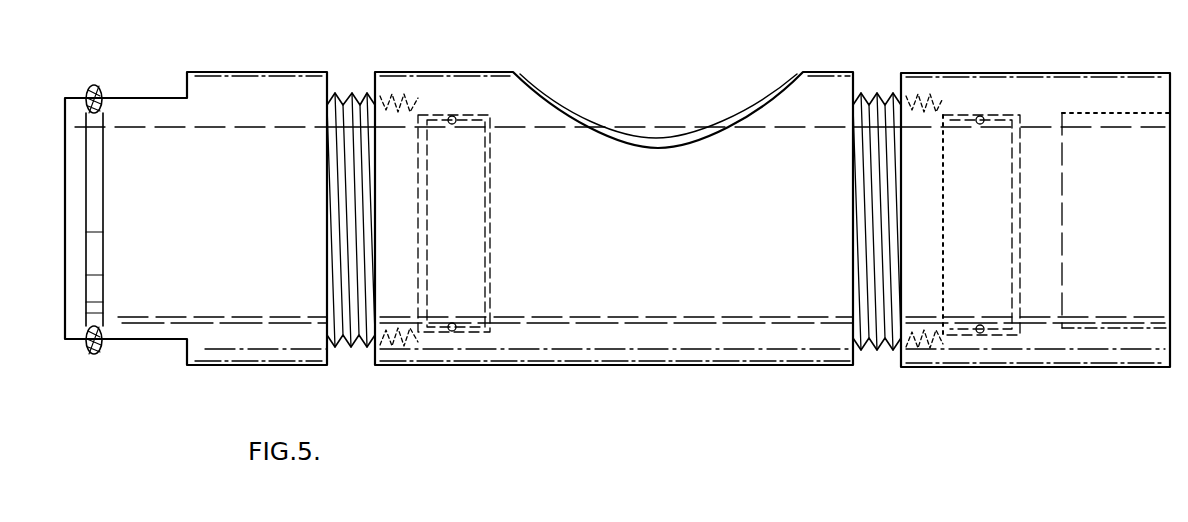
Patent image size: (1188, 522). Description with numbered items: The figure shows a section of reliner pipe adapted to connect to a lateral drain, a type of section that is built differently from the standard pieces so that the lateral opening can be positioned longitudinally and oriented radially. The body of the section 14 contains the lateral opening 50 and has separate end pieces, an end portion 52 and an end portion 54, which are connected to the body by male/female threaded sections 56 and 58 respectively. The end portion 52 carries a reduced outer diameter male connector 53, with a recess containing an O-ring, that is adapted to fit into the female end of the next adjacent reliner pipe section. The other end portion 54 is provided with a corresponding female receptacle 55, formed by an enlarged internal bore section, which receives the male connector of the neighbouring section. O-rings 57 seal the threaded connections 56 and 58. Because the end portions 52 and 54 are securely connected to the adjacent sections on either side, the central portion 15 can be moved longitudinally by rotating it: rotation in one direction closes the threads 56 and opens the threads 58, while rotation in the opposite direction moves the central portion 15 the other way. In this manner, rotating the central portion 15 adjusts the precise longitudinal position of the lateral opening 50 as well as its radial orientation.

The body of the section 14 is at (483, 72).
The central portion 15 is at (614, 237).
The lateral opening 50 is at (657, 140).
The end portion 52 is at (254, 72).
The male connector 53 is at (120, 96).
The end portion 54 is at (1014, 73).
The female receptacle 55 is at (1087, 117).
The threaded section 56 is at (347, 95).
The O-rings 57 is at (452, 333).
The threaded section 58 is at (872, 89).